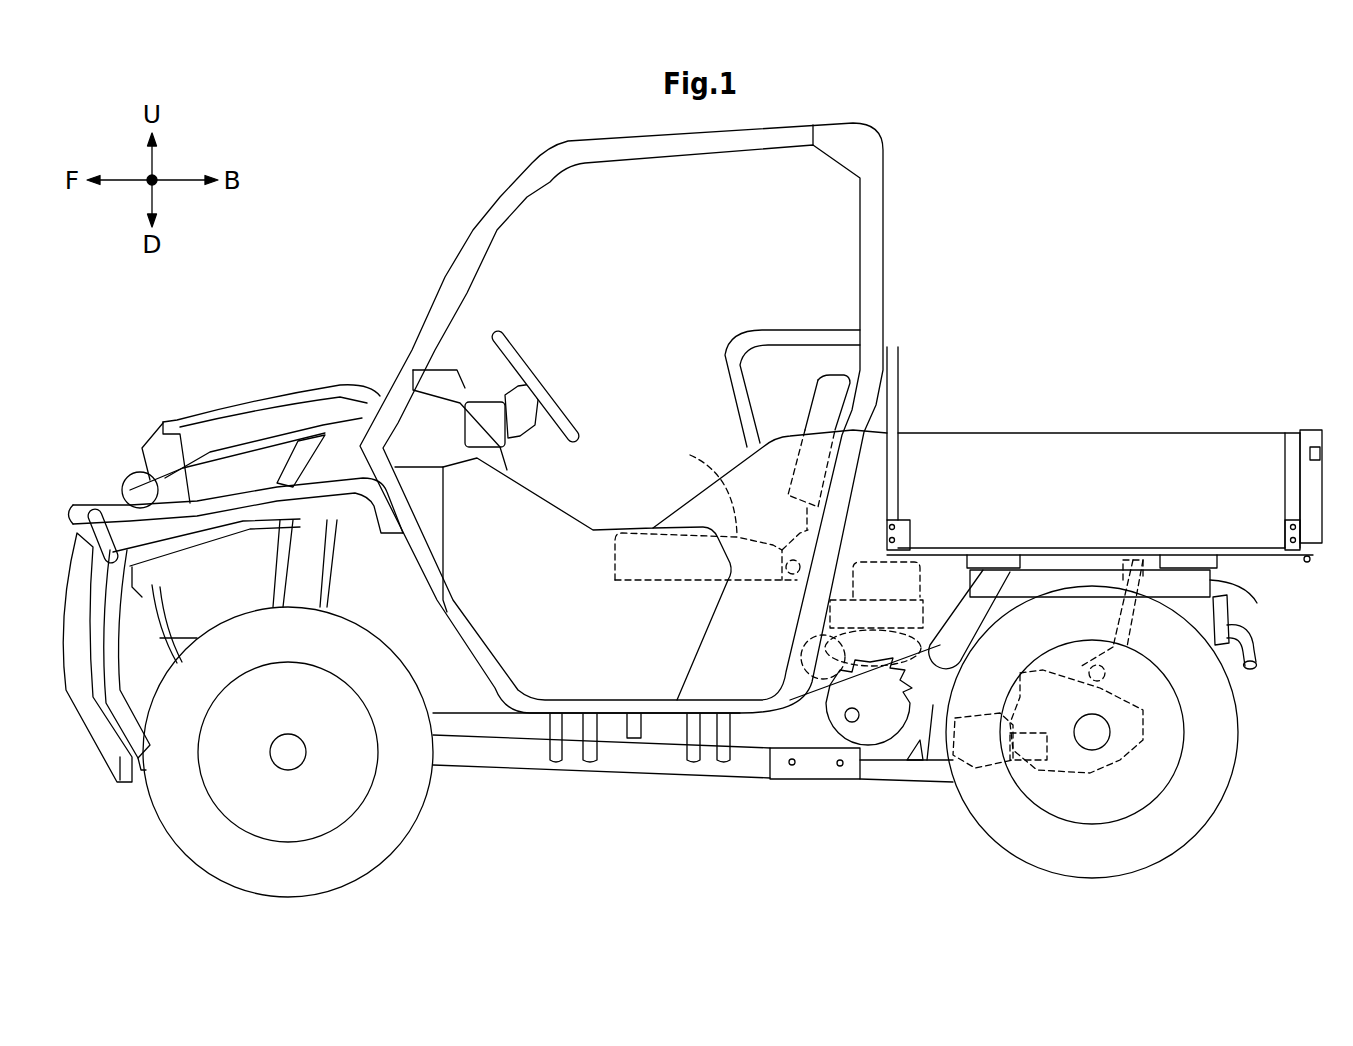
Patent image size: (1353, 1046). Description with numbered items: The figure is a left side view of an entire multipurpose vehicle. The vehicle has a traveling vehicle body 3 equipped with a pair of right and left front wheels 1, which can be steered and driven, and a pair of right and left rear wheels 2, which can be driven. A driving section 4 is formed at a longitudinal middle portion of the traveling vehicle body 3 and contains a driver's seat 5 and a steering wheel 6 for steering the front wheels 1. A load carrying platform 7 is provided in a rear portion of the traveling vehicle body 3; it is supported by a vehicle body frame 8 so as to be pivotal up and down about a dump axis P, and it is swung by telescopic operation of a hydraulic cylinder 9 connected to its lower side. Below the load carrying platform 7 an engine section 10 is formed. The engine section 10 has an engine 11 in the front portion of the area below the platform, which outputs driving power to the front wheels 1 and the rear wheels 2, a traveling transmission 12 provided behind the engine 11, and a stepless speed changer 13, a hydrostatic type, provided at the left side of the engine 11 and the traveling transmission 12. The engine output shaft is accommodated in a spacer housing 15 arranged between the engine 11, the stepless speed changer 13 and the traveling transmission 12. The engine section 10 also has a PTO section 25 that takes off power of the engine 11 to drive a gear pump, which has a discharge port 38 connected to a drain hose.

The front wheels 1 is at (363, 840).
The rear wheels 2 is at (1168, 838).
The traveling vehicle body 3 is at (621, 782).
The driving section 4 is at (432, 274).
The driver's seat 5 is at (732, 477).
The steering wheel 6 is at (540, 378).
The load carrying platform 7 is at (1082, 433).
The vehicle body frame 8 is at (1195, 580).
The hydraulic cylinder 9 is at (1120, 617).
The engine section 10 is at (979, 613).
The engine 11 is at (910, 607).
The traveling transmission 12 is at (1082, 773).
The stepless speed changer 13 is at (932, 710).
The spacer housing 15 is at (882, 707).
The PTO section 25 is at (806, 778).
The discharge port 38 is at (846, 720).
The dump axis P is at (1309, 563).